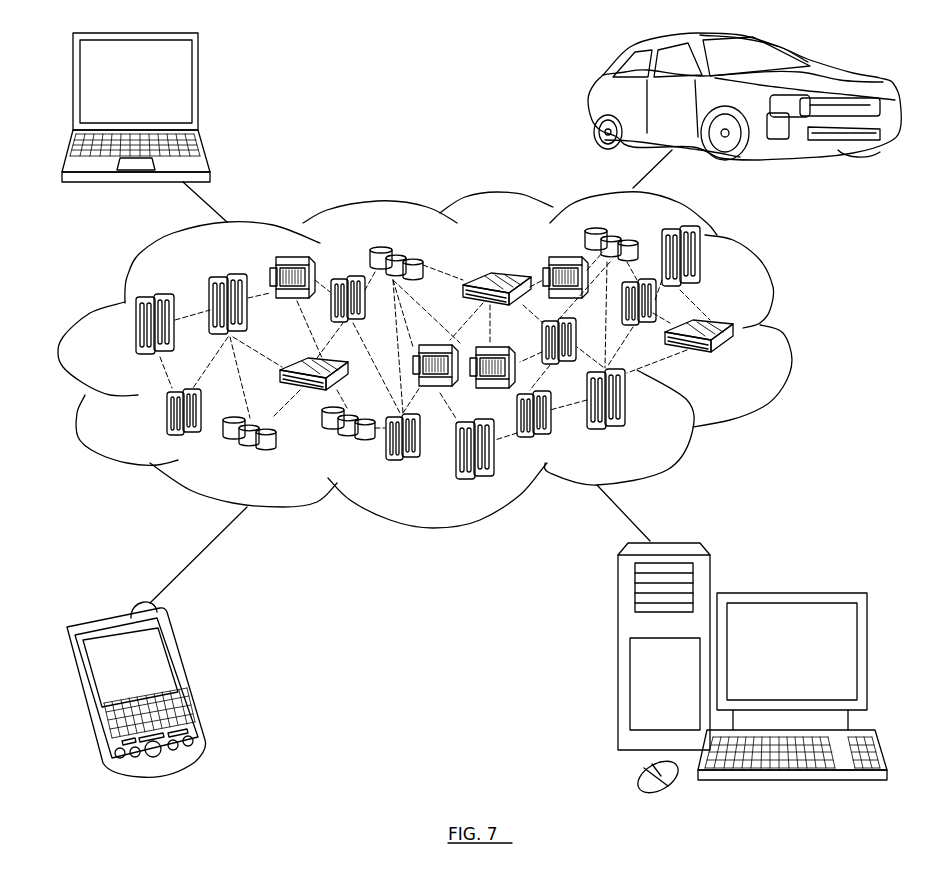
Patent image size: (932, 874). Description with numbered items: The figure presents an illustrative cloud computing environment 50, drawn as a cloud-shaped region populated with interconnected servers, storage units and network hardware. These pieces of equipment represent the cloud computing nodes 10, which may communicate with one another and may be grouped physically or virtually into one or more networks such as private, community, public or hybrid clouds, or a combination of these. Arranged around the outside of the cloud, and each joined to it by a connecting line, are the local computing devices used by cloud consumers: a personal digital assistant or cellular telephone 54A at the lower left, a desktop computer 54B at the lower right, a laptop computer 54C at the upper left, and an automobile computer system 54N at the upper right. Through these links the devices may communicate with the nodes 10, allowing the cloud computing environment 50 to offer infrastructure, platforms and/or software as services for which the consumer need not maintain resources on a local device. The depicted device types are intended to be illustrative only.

The cloud computing nodes 10 is at (737, 362).
The cloud computing environment 50 is at (790, 337).
The personal digital assistant (PDA) or cellular telephone 54A is at (188, 678).
The desktop computer 54B is at (788, 592).
The laptop computer 54C is at (197, 88).
The automobile computer system 54N is at (590, 100).